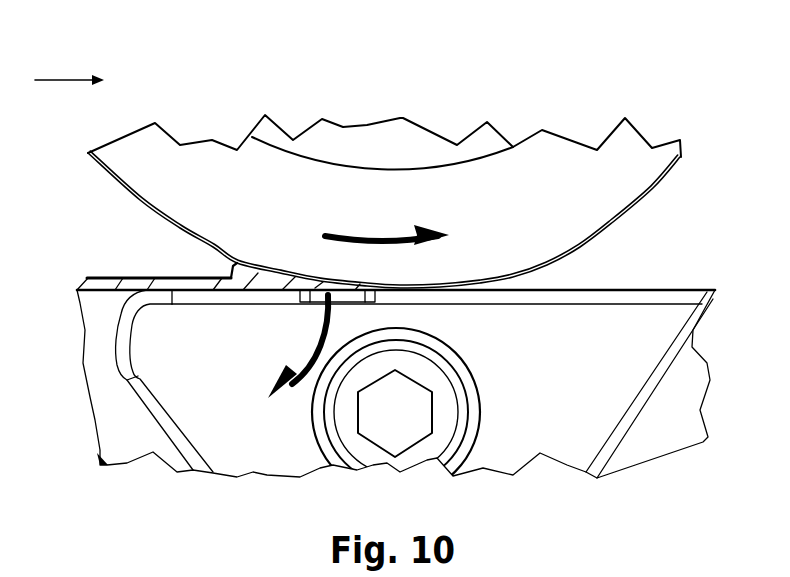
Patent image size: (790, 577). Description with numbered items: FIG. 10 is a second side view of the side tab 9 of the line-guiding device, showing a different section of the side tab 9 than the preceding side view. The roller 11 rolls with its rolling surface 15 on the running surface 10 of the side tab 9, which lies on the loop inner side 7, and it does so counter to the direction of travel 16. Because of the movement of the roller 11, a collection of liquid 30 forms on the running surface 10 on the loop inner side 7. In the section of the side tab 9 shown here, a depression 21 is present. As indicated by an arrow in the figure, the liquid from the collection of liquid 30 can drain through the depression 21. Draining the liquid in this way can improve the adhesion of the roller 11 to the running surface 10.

The direction of travel 16 is at (63, 80).
The roller 11 is at (568, 157).
The rolling surface 15 is at (659, 194).
The loop inner side 7 is at (414, 399).
The running surface 10 is at (414, 399).
The side tab 9 is at (600, 408).
The depression 21 is at (360, 294).
The collection of liquid 30 is at (233, 265).